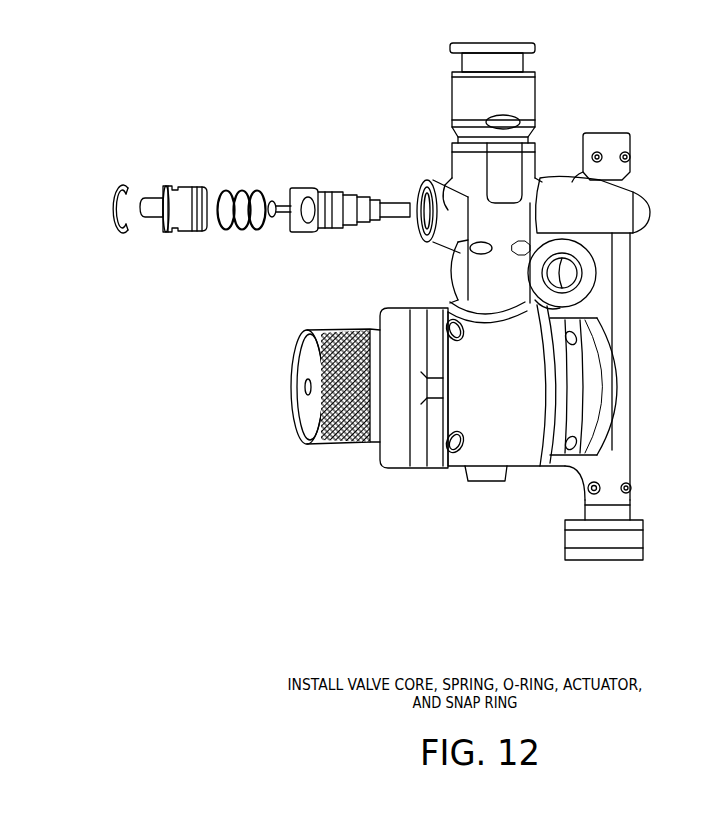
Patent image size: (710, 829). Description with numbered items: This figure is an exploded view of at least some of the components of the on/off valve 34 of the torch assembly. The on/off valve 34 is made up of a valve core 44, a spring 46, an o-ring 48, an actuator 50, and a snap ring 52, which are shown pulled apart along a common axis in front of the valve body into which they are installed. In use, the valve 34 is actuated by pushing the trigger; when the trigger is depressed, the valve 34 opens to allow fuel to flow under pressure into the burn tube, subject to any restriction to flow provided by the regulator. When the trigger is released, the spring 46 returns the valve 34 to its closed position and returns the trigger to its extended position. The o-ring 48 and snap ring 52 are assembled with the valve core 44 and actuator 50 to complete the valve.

The on/off valve 34 is at (413, 165).
The valve core 44 is at (343, 220).
The spring 46 is at (228, 225).
The o-ring 48 is at (182, 225).
The actuator 50 is at (166, 192).
The snap ring 52 is at (118, 230).